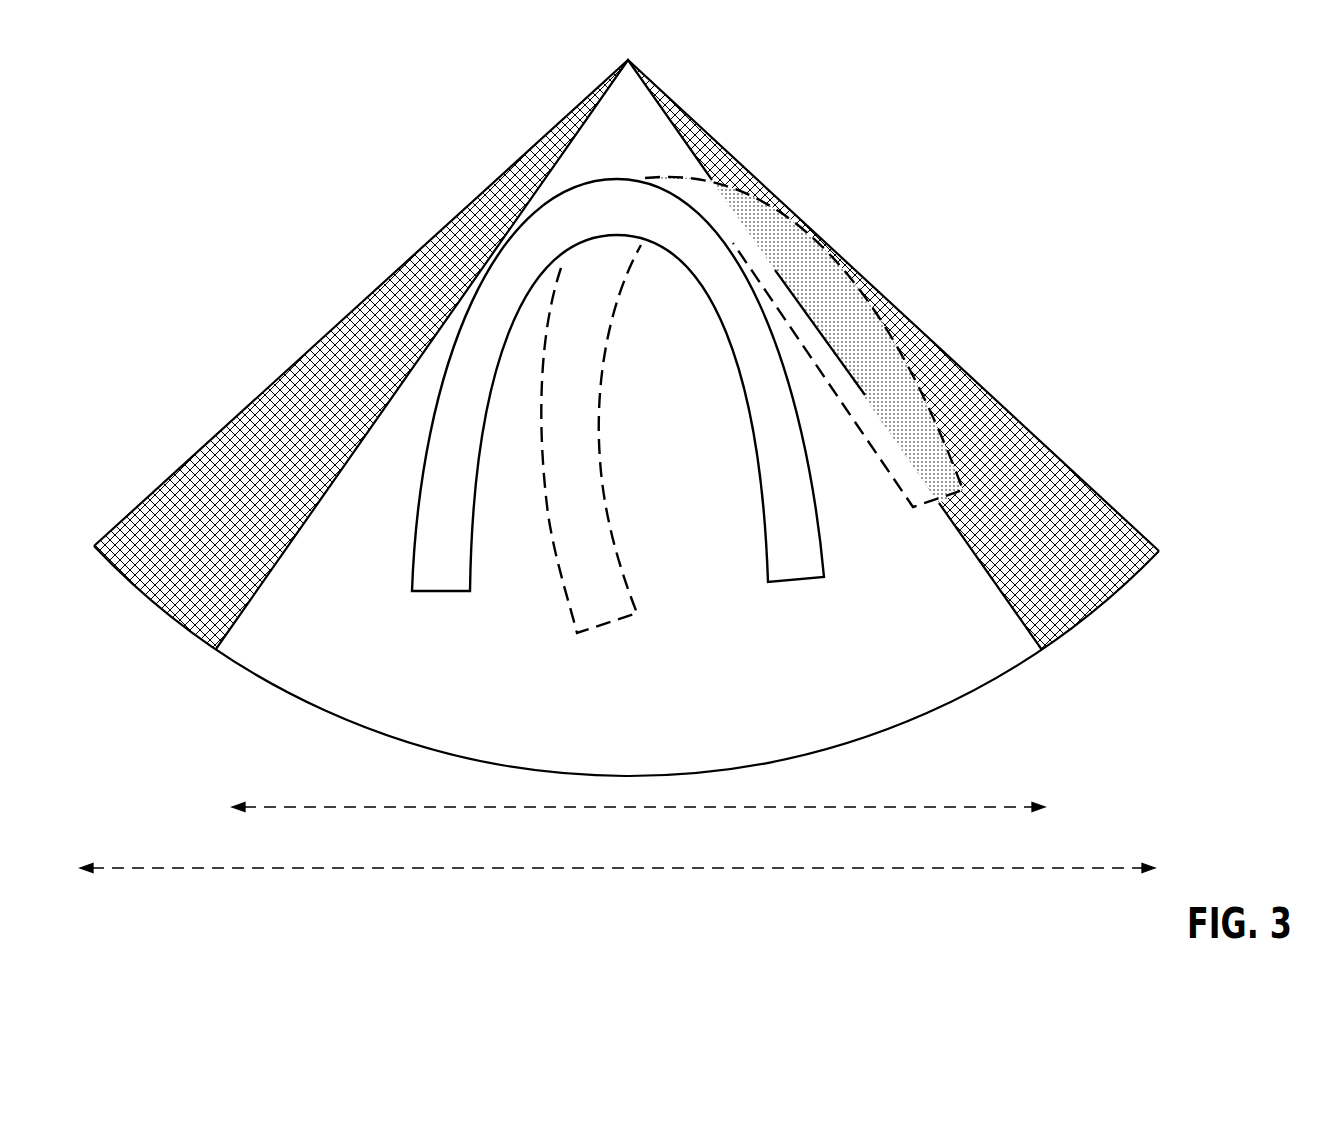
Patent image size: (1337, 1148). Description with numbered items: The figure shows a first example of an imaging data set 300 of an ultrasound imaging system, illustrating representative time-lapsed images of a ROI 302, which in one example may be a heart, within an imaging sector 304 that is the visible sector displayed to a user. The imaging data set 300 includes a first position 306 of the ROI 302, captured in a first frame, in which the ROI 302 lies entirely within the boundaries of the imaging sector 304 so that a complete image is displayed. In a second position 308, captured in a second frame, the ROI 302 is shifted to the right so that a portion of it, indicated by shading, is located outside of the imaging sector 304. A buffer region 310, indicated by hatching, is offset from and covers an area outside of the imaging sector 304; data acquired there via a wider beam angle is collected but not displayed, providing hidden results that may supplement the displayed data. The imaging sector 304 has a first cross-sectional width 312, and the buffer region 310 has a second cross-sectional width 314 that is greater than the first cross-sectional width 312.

The imaging data set 300 is at (878, 133).
The ROI 302 is at (576, 631).
The imaging sector 304 is at (852, 746).
The first position 306 is at (412, 510).
The second position 308 is at (599, 440).
The buffer region 310 is at (178, 627).
The first cross-sectional width 312 is at (317, 807).
The second cross-sectional width 314 is at (203, 869).